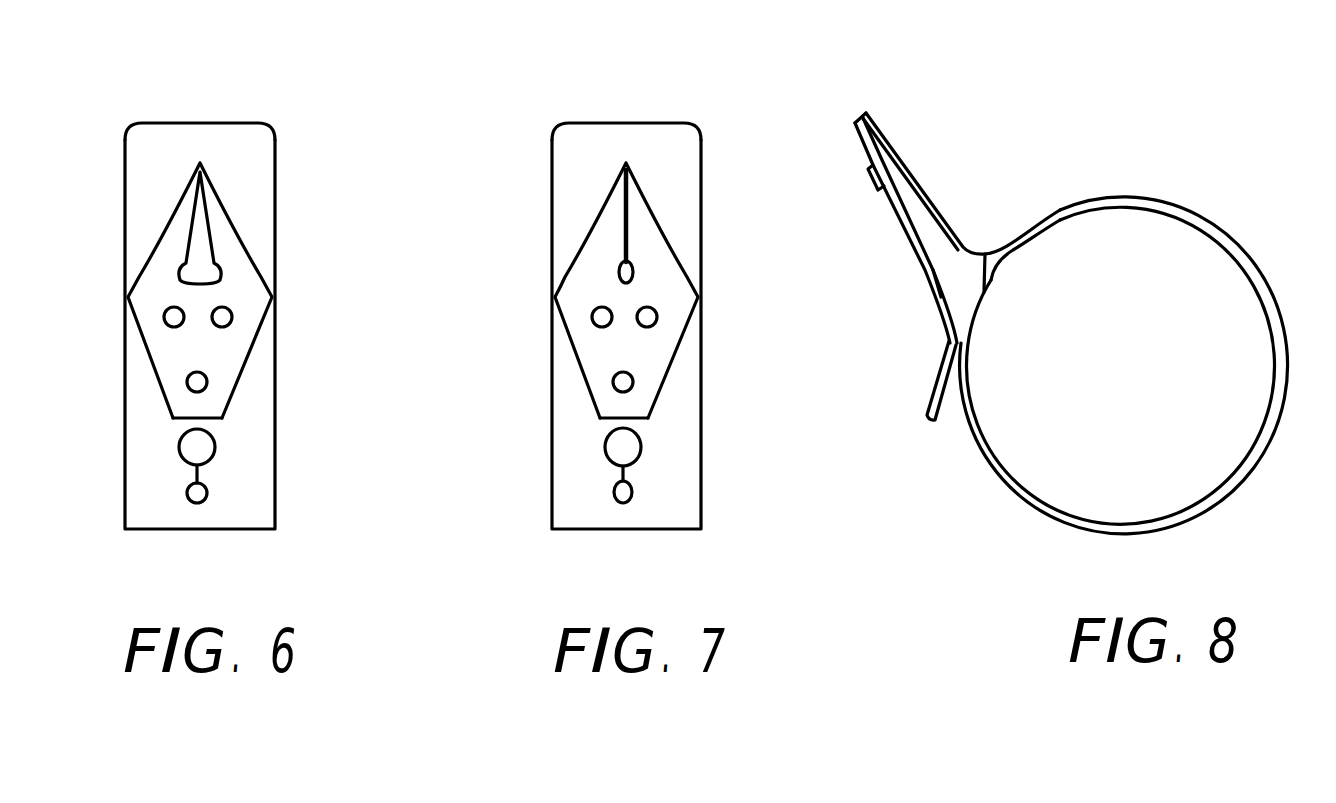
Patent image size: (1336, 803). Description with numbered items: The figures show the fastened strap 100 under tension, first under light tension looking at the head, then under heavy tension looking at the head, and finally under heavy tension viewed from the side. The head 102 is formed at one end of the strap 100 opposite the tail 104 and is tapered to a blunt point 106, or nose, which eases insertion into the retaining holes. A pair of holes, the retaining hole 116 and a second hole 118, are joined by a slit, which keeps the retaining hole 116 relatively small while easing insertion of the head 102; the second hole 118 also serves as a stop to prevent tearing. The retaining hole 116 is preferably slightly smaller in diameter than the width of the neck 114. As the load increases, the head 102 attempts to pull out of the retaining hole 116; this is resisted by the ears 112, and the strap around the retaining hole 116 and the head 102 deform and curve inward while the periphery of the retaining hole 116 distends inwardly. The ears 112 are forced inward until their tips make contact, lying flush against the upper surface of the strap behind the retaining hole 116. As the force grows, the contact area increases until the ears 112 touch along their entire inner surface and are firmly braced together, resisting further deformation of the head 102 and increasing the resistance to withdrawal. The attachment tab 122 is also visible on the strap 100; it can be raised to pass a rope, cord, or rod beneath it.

In FIG. 8, the strap 100 is at (1146, 338).
In FIG. 6, the head 102 is at (148, 334).
In FIG. 7, the head 102 is at (565, 334).
In FIG. 6, the tail 104 is at (209, 99).
In FIG. 7, the tail 104 is at (641, 99).
In FIG. 8, the tail 104 is at (934, 196).
In FIG. 6, the blunt point 106 is at (287, 438).
In FIG. 7, the blunt point 106 is at (717, 439).
In FIG. 8, the blunt point 106 is at (867, 380).
In FIG. 6, the ears 112 is at (213, 290).
In FIG. 7, the ears 112 is at (629, 288).
In FIG. 8, the ears 112 is at (821, 220).
In FIG. 8, the neck 114 is at (1057, 209).
In FIG. 6, the retaining hole 116 is at (289, 471).
In FIG. 7, the retaining hole 116 is at (717, 468).
In FIG. 8, the retaining hole 116 is at (983, 190).
In FIG. 6, the second hole 118 is at (251, 534).
In FIG. 7, the second hole 118 is at (702, 532).
In FIG. 6, the attachment tab 122 is at (297, 513).
In FIG. 7, the attachment tab 122 is at (731, 509).